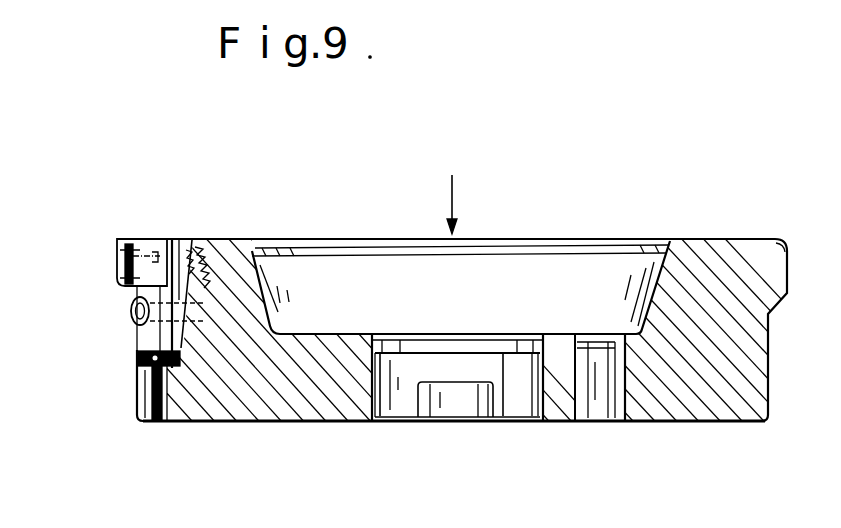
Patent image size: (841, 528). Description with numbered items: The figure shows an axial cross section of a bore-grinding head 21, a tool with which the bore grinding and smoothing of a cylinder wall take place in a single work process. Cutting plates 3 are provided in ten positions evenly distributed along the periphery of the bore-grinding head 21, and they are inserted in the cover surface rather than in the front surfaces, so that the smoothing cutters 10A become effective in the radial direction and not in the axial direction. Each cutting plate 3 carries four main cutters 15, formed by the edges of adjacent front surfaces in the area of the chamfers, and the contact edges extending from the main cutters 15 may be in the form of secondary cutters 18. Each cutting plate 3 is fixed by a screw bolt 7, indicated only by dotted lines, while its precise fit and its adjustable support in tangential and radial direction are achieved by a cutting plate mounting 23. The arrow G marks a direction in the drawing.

The bore-grinding head 21 is at (672, 441).
The screw bolt 7 is at (208, 242).
The cutting plate 3 is at (133, 238).
The smoothing cutter 10A is at (117, 258).
The main cutter 15 is at (120, 241).
The secondary cutter 18 is at (127, 243).
The cutting plate mounting 23 is at (124, 341).
The direction of force G is at (452, 185).